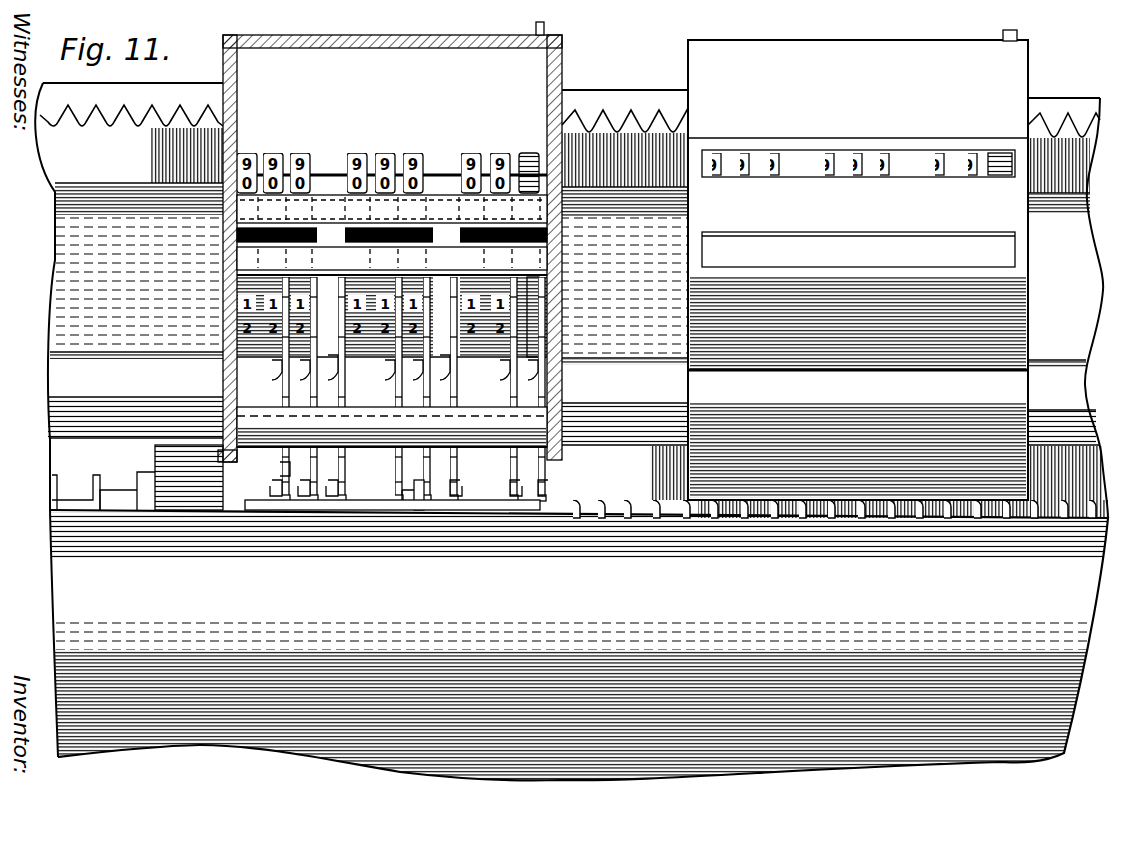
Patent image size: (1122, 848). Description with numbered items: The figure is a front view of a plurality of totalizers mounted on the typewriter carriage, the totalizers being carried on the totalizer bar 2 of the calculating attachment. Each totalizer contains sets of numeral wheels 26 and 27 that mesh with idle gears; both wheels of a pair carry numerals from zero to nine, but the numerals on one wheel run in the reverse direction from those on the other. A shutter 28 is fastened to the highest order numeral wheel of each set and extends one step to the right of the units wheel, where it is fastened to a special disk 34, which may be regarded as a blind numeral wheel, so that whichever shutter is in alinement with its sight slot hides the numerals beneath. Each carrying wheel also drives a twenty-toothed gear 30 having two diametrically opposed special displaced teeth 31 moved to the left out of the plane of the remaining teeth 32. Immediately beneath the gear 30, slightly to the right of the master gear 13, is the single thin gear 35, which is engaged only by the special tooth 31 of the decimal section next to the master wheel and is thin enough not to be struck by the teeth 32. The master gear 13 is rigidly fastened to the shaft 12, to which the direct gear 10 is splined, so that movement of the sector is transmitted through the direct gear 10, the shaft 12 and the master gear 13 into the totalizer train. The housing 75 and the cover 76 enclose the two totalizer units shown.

The totalizer bar 2 is at (1090, 258).
The direct gear 10 is at (163, 464).
The shaft 12 is at (72, 502).
The master gear 13 is at (392, 508).
The numeral wheel 26 is at (478, 154).
The numeral wheel 27 is at (505, 355).
The shutter 28 is at (415, 263).
The twenty-toothed gear 30 is at (456, 386).
The special displaced tooth 31 is at (330, 370).
The tooth 32 is at (282, 457).
The special disk 34 is at (532, 152).
The thin gear 35 is at (420, 491).
The housing 75 is at (388, 31).
The cover 76 is at (820, 41).